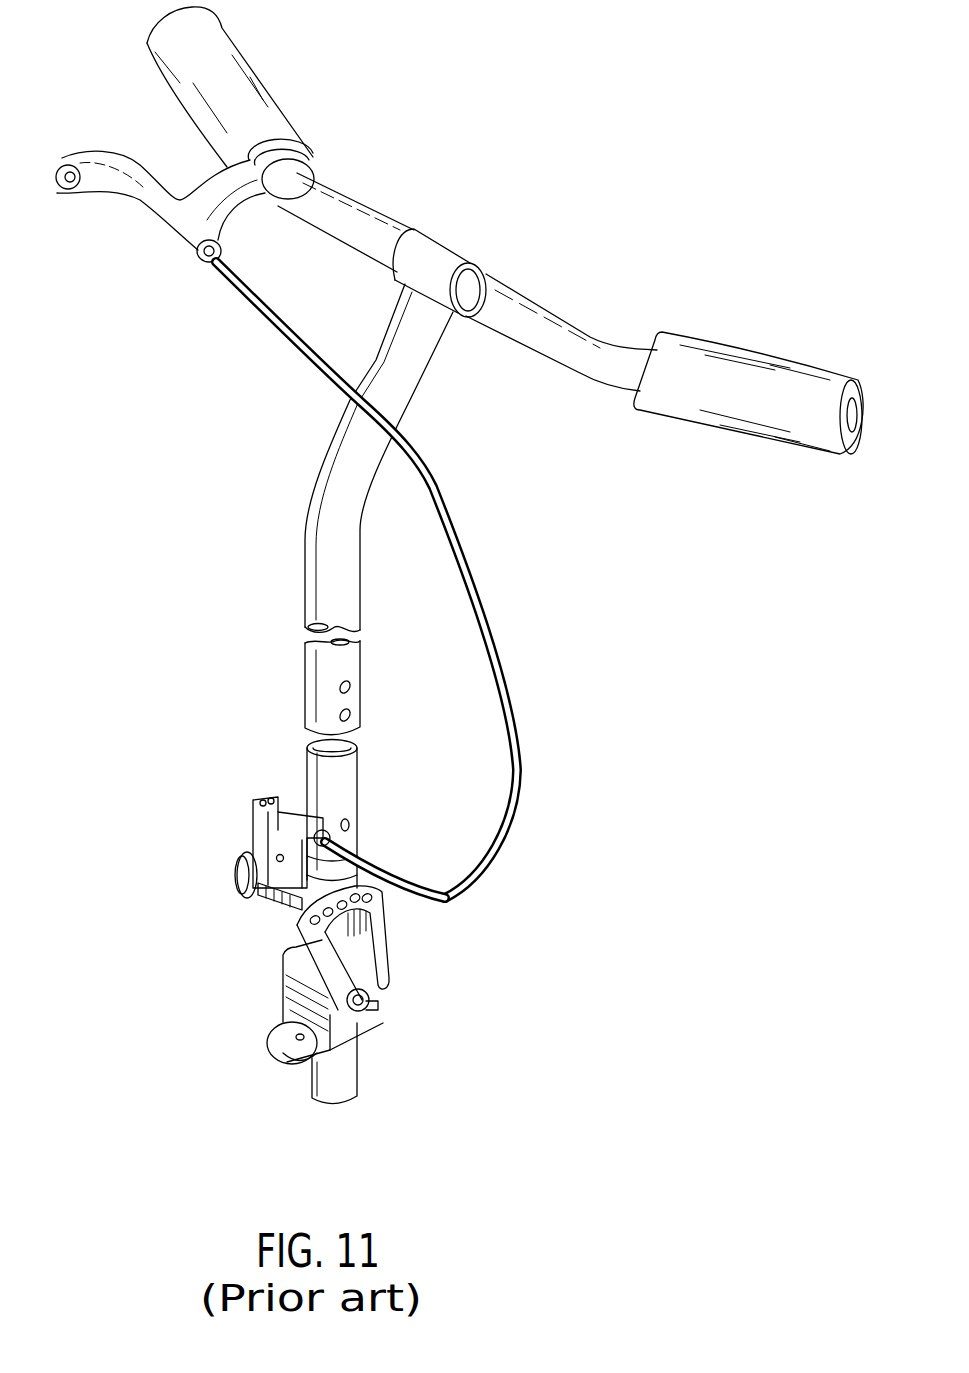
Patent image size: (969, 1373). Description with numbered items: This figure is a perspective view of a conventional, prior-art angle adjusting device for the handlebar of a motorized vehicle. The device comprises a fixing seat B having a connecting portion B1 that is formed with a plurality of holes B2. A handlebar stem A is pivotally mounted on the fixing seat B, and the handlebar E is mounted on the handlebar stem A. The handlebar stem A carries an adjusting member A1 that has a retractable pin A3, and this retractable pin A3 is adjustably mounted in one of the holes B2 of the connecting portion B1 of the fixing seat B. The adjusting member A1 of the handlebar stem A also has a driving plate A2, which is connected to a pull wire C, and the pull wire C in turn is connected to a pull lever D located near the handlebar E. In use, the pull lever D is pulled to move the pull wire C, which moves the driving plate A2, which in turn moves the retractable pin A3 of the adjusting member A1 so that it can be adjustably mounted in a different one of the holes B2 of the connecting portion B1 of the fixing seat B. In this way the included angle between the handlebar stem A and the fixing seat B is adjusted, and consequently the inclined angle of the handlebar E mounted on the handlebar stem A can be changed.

The handlebar stem A is at (345, 587).
The adjusting member A1 is at (287, 881).
The driving plate A2 is at (322, 822).
The retractable pin A3 is at (330, 912).
The fixing seat B is at (343, 1095).
The connecting portion B1 is at (297, 1047).
The holes B2 is at (340, 948).
The pull wire C is at (447, 513).
The pull lever D is at (122, 182).
The handlebar E is at (517, 295).